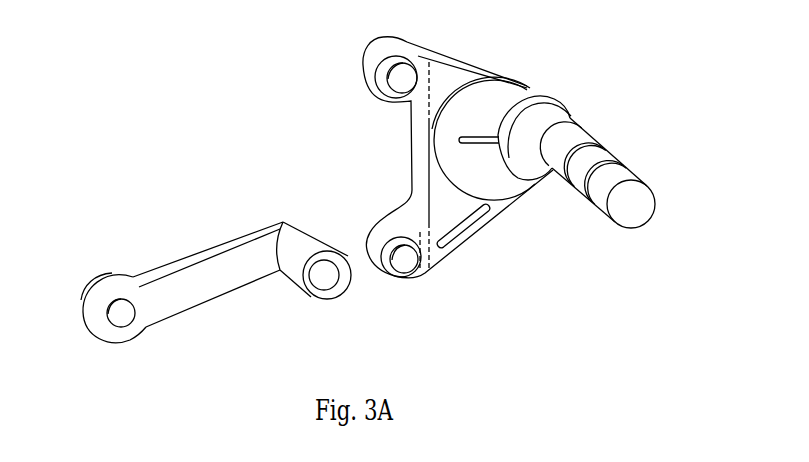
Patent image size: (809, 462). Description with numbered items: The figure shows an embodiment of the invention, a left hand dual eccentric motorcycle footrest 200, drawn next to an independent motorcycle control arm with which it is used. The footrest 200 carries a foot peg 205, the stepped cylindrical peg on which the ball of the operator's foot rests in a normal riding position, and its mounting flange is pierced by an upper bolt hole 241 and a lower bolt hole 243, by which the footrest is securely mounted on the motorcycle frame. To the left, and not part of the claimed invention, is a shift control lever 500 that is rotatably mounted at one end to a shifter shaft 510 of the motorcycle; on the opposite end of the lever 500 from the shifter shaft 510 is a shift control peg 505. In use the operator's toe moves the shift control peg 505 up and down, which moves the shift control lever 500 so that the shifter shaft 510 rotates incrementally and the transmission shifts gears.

The left hand dual eccentric motorcycle footrest 200 is at (523, 65).
The foot peg 205 is at (610, 150).
The upper bolt hole 241 is at (388, 83).
The lower bolt hole 243 is at (395, 264).
The shift control lever 500 is at (218, 284).
The shift control peg 505 is at (311, 243).
The shifter shaft 510 is at (110, 320).